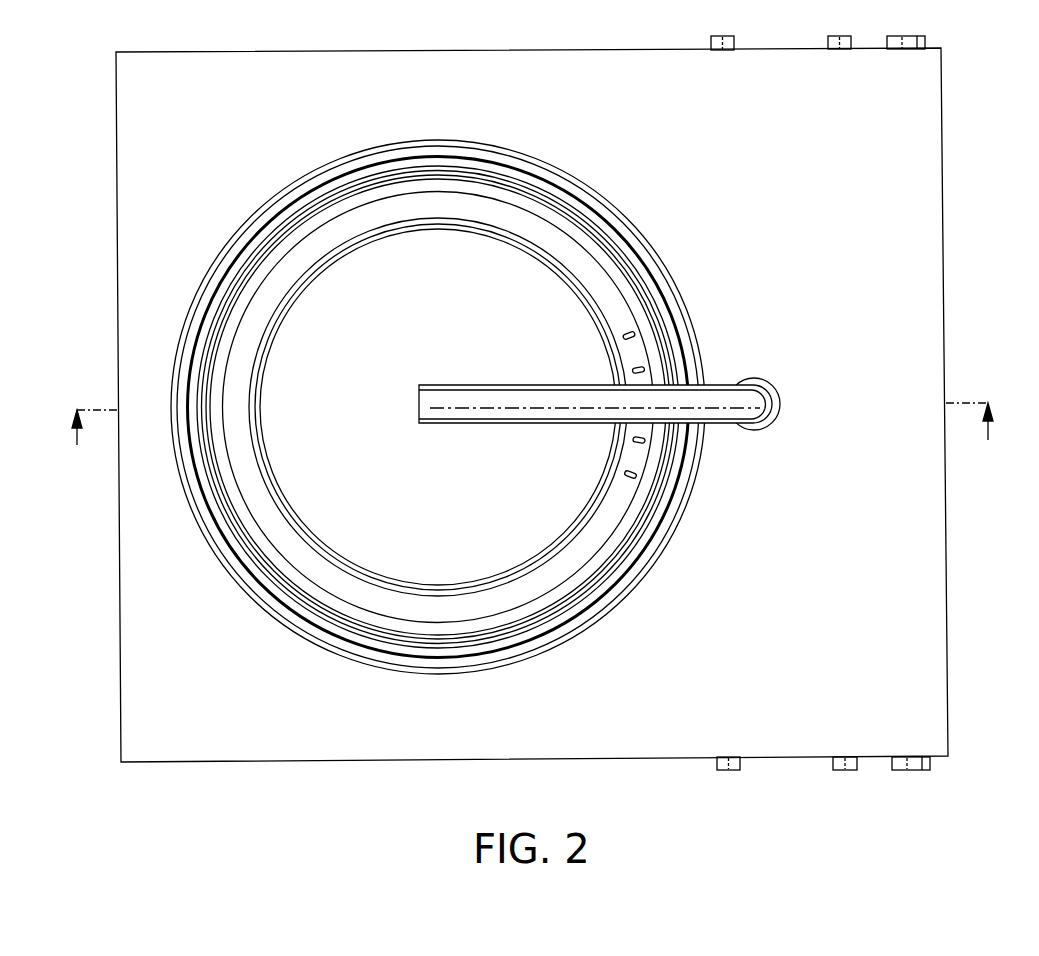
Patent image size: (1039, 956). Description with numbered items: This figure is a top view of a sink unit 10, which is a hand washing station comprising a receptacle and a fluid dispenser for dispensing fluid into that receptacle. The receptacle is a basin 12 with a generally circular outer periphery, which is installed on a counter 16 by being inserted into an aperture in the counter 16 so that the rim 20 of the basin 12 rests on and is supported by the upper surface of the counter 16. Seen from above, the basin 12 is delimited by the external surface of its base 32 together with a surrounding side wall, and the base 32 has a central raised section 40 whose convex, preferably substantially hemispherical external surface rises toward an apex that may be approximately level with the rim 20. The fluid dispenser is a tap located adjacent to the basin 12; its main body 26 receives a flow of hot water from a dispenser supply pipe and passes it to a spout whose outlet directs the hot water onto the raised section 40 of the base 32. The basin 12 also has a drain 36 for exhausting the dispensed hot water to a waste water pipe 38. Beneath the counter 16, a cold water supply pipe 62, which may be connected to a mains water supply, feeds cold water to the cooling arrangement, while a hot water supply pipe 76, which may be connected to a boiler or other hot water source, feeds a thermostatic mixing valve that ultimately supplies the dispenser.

The sink unit 10 is at (538, 434).
The basin 12 is at (640, 217).
The counter 16 is at (937, 628).
The rim 20 is at (420, 650).
The main body 26 is at (720, 397).
The base 32 is at (548, 578).
The drain 36 is at (630, 482).
The waste water pipe 38 is at (912, 770).
The raised section 40 is at (336, 530).
The cold water supply pipe 62 is at (728, 770).
The hot water supply pipe 76 is at (848, 770).